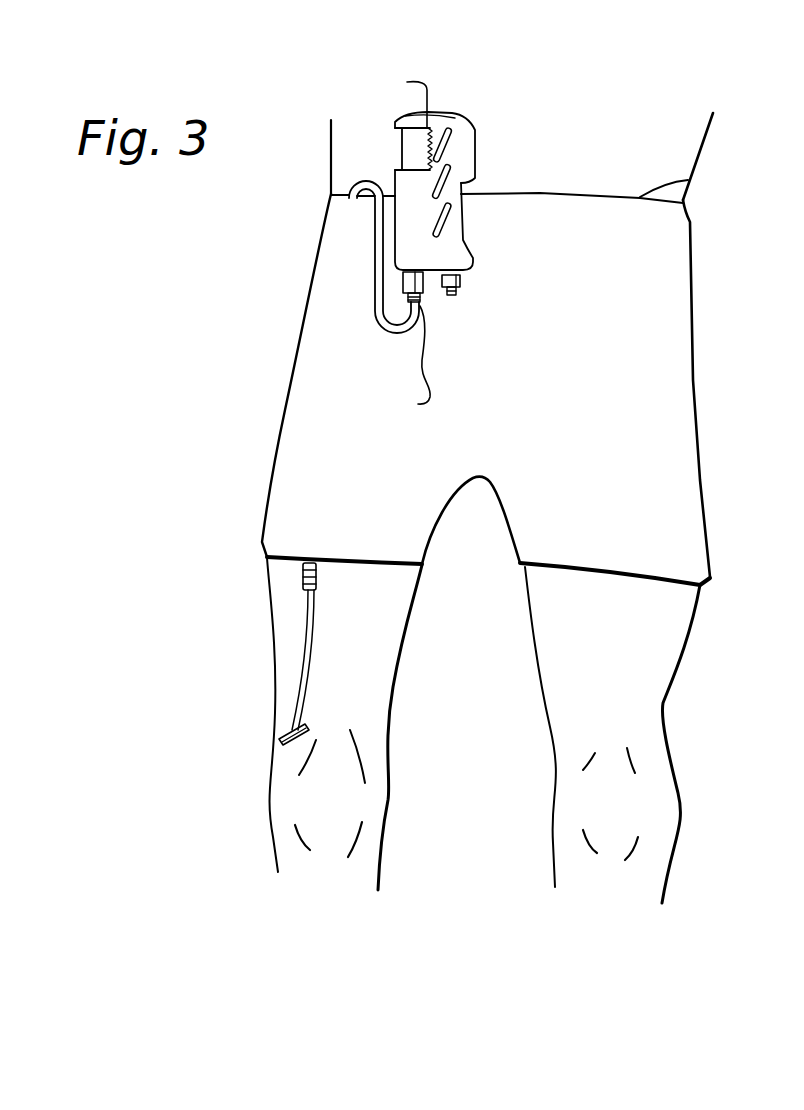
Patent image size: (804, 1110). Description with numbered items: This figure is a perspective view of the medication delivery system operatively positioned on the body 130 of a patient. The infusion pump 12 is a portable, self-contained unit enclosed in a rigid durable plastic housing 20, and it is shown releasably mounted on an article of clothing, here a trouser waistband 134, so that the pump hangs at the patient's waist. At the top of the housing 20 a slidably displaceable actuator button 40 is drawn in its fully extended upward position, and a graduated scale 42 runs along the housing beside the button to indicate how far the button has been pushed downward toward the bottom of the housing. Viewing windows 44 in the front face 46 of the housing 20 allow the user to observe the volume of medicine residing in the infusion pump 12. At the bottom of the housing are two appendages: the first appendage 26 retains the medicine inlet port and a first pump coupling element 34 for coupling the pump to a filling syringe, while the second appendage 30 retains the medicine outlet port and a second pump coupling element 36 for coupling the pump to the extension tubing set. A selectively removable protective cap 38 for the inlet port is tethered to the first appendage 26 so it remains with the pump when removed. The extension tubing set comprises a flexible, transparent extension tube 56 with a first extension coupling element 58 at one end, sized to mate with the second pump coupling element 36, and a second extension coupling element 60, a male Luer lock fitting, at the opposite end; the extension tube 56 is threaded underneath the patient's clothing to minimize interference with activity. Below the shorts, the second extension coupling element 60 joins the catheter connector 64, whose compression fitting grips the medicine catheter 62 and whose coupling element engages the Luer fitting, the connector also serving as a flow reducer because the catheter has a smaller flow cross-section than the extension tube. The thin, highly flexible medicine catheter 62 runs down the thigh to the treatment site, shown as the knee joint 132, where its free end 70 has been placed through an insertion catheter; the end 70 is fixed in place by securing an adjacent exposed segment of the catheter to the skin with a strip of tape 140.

The infusion pump 12 is at (477, 132).
The housing 20 is at (462, 223).
The first appendage 26 is at (462, 275).
The second appendage 30 is at (403, 278).
The first pump coupling element 34 is at (463, 289).
The second pump coupling element 36 is at (422, 304).
The protective cap 38 is at (455, 295).
The actuator button 40 is at (395, 124).
The graduated scale 42 is at (402, 96).
The viewing windows 44 is at (460, 180).
The front face 46 is at (453, 123).
The extension tube 56 is at (357, 188).
The first extension coupling element 58 is at (406, 362).
The second extension coupling element 60 is at (303, 568).
The medicine catheter 62 is at (303, 630).
The catheter connector 64 is at (303, 580).
The second bare open end 70 is at (292, 730).
The body 130 is at (692, 128).
The knee joint 132 is at (395, 733).
The trouser waistband 134 is at (688, 181).
The strip of tape 140 is at (280, 742).